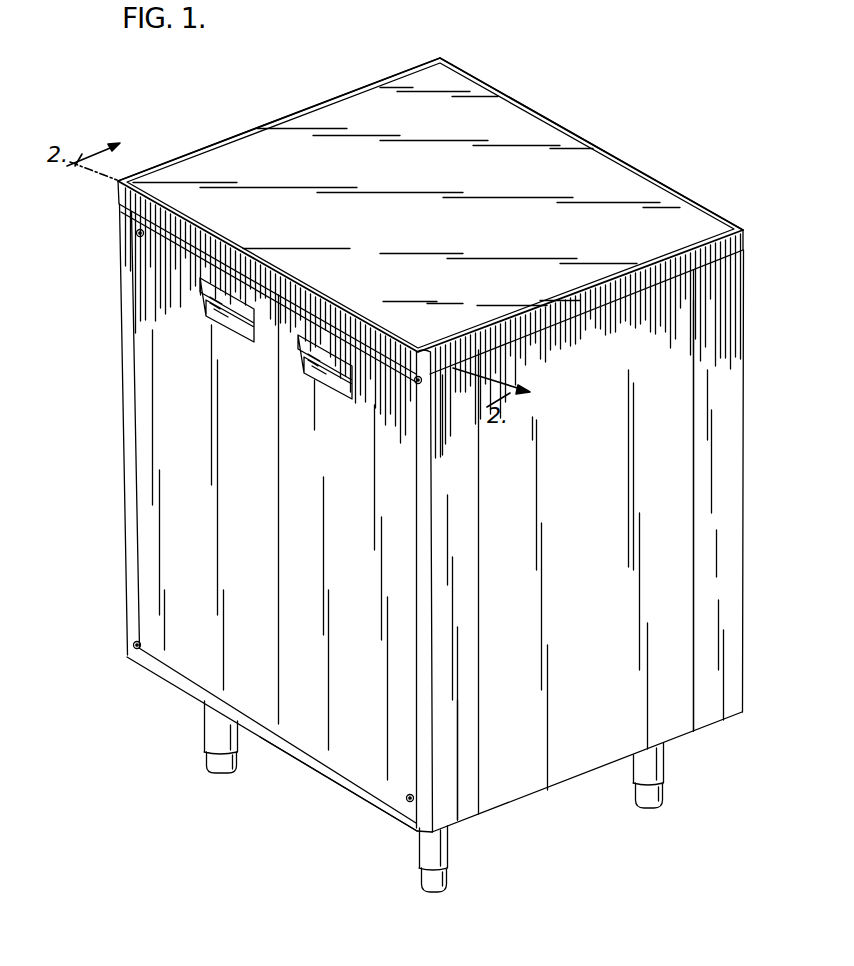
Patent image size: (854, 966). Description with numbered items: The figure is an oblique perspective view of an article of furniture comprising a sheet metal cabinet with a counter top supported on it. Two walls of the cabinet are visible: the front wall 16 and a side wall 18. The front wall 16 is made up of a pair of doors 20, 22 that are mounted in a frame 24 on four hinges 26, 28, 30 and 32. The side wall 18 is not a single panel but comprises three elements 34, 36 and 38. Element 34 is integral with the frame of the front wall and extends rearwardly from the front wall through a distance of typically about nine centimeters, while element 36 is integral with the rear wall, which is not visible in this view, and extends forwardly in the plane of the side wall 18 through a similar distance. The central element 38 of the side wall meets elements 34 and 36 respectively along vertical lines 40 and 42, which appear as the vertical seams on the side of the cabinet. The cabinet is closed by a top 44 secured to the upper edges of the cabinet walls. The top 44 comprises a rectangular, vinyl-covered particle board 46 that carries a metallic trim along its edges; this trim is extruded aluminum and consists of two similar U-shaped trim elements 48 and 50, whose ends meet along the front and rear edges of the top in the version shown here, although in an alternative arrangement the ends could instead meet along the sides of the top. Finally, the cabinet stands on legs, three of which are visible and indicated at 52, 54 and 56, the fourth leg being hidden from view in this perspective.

The front wall 16 is at (165, 672).
The side wall 18 is at (570, 748).
The door 20 is at (175, 487).
The door 22 is at (372, 762).
The frame 24 is at (125, 395).
The hinge 26 is at (418, 377).
The hinge 28 is at (407, 801).
The hinge 30 is at (136, 233).
The hinge 32 is at (133, 645).
The side wall element 34 is at (455, 806).
The side wall element 36 is at (727, 538).
The side wall element 38 is at (660, 715).
The vertical line 40 is at (478, 582).
The vertical line 42 is at (693, 552).
The top 44 is at (505, 118).
The particle board 46 is at (592, 168).
The trim element 48 is at (245, 128).
The trim element 50 is at (587, 300).
The leg 52 is at (420, 855).
The leg 54 is at (665, 780).
The leg 56 is at (212, 733).